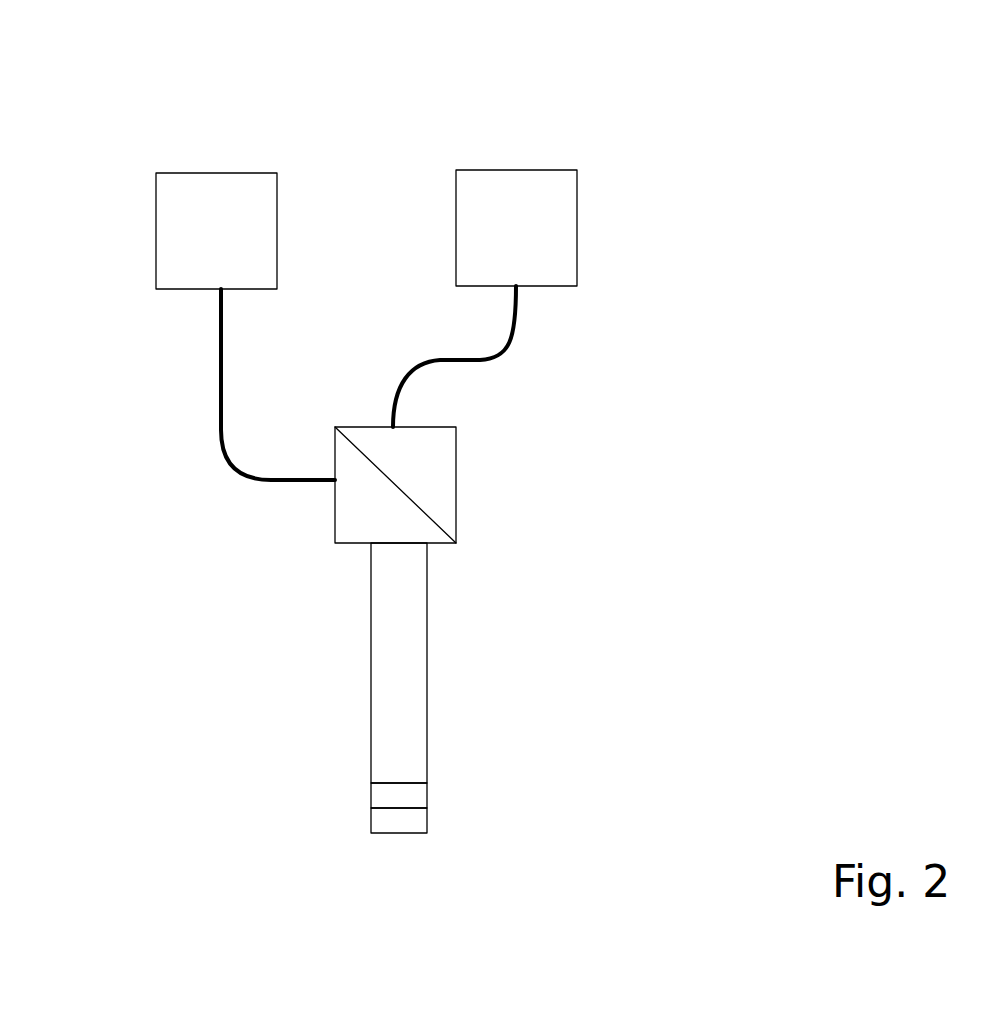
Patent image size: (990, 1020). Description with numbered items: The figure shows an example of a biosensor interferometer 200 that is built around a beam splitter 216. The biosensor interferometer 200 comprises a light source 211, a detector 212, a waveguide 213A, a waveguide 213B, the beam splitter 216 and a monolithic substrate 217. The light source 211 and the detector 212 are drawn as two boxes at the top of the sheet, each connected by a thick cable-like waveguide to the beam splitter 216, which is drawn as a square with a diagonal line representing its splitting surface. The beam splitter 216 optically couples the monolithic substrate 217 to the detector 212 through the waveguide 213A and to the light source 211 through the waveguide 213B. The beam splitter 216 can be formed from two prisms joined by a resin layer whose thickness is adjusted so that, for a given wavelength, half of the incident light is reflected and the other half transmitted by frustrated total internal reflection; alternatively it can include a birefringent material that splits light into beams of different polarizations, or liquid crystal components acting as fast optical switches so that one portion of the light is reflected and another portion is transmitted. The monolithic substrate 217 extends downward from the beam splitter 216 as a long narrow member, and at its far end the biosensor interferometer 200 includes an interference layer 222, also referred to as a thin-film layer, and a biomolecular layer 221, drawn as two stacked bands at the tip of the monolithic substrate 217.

The biosensor interferometer 200 is at (433, 70).
The light source 211 is at (510, 185).
The detector 212 is at (205, 185).
The waveguide 213A is at (213, 377).
The waveguide 213B is at (510, 347).
The beam splitter 216 is at (458, 500).
The monolithic substrate 217 is at (426, 670).
The biomolecular layer 221 is at (427, 825).
The interference layer 222 is at (370, 793).